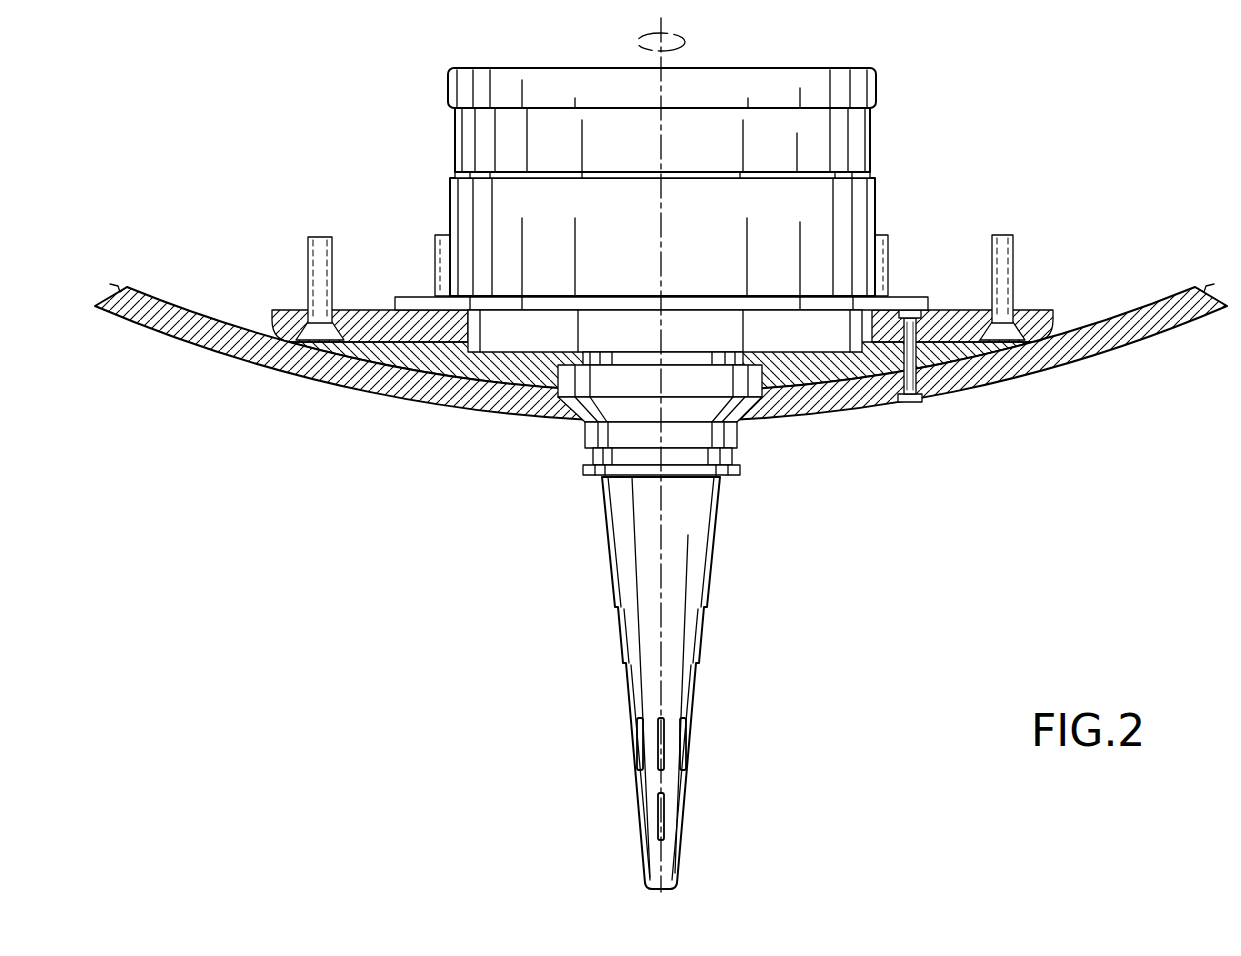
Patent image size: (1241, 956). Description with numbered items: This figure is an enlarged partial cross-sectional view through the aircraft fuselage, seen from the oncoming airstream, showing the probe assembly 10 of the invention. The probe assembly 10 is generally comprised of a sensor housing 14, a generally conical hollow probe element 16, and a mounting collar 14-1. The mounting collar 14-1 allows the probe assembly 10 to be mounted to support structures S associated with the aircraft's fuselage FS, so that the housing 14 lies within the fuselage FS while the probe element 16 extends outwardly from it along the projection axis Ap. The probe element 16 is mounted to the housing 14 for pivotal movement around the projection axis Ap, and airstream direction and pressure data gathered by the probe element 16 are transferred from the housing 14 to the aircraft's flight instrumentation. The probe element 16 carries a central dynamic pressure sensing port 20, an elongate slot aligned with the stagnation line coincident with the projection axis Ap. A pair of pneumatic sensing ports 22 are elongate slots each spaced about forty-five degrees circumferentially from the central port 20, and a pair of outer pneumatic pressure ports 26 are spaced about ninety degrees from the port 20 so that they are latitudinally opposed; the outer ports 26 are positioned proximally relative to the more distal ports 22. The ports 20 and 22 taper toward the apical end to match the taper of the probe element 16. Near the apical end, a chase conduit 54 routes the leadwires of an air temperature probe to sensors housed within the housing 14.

The probe assembly 10 is at (662, 478).
The sensor housing 14 is at (634, 222).
The mounting collar 14-1 is at (903, 298).
The conical hollow probe element 16 is at (648, 620).
The central dynamic pressure sensing port 20 is at (661, 735).
The pneumatic sensing ports 22 is at (640, 742).
The outer pneumatic pressure ports 26 is at (617, 617).
The chase conduit 54 is at (661, 805).
The support structures S is at (350, 322).
The fuselage FS is at (1120, 337).
The projection axis Ap is at (636, 40).